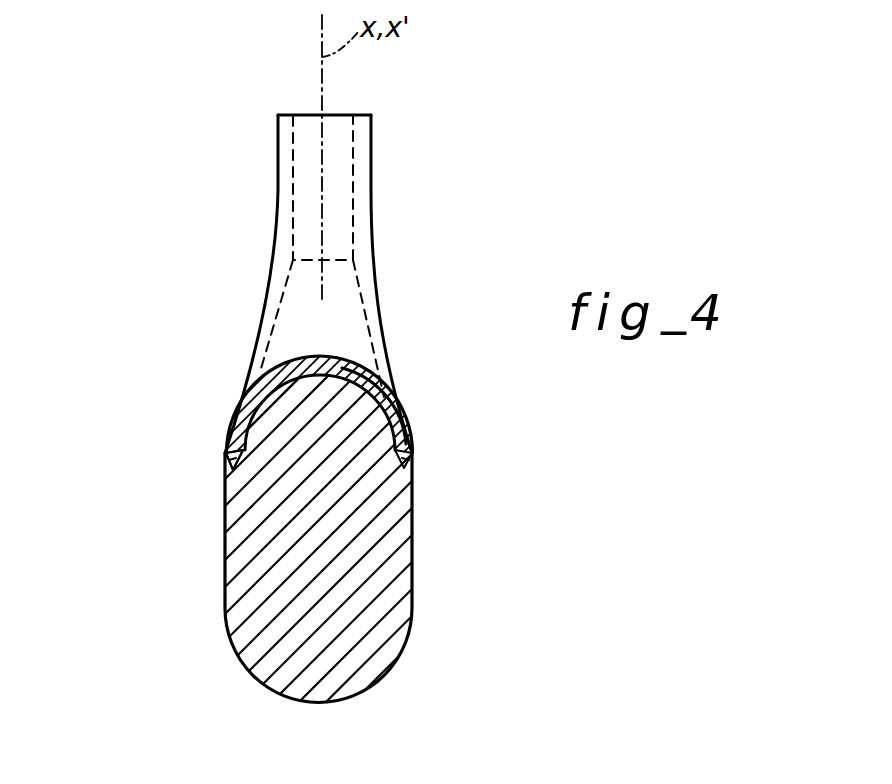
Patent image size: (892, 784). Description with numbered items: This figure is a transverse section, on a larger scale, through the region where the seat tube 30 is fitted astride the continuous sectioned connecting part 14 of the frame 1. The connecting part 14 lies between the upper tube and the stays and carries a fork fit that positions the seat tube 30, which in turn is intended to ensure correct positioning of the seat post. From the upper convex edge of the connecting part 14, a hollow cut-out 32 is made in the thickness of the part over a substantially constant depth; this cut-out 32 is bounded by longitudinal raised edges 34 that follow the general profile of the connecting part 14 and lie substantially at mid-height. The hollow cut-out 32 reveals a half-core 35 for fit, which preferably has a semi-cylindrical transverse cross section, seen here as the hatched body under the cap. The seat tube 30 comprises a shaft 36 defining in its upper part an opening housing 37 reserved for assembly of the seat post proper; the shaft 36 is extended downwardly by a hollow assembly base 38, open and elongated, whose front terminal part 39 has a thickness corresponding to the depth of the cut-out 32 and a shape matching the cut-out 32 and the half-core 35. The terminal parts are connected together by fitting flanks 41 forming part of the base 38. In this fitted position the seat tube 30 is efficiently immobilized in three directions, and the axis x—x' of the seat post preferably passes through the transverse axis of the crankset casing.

The device 1 is at (208, 630).
The connecting part 14 is at (355, 585).
The seat tube 30 is at (395, 184).
The hollow cut-out 32 is at (346, 391).
The longitudinal raised edges 34 is at (227, 477).
The half-core 35 is at (298, 415).
The shaft 36 is at (278, 148).
The opening housing 37 is at (300, 190).
The hollow assembly base 38 is at (336, 344).
The front terminal part 39 is at (291, 357).
The fitting flanks 41 is at (231, 423).